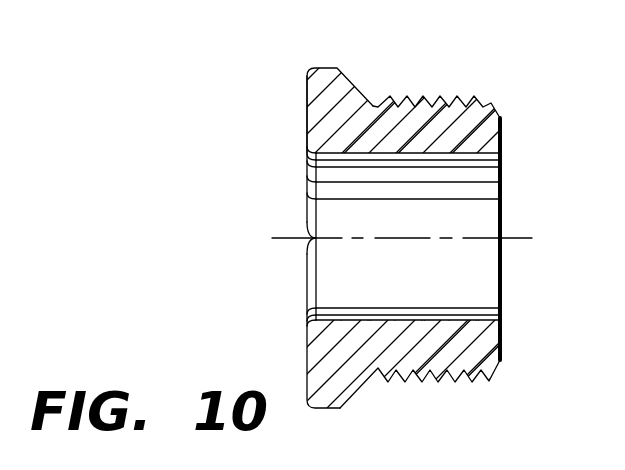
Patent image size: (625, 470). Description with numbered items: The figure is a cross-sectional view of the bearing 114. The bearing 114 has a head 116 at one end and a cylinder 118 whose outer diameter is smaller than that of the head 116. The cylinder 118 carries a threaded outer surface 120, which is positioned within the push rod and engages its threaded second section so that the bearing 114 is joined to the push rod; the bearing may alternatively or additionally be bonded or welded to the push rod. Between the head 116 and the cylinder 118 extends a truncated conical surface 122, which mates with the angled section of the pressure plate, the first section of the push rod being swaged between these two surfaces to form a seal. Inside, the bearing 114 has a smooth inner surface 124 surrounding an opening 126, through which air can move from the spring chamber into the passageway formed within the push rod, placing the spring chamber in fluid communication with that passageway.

The bearing 114 is at (257, 111).
The head 116 is at (314, 72).
The cylinder 118 is at (470, 123).
The threaded outer surface 120 is at (442, 98).
The truncated conical surface 122 is at (362, 385).
The smooth inner surface 124 is at (463, 147).
The opening 126 is at (465, 288).